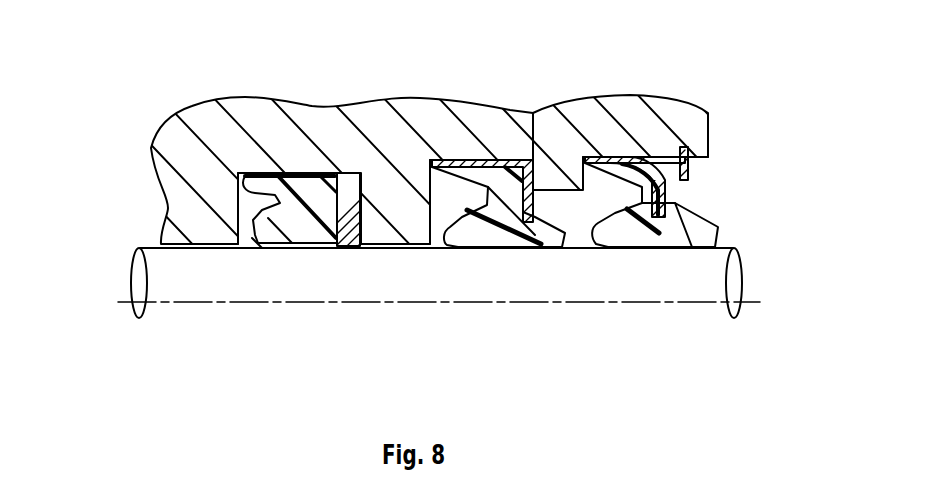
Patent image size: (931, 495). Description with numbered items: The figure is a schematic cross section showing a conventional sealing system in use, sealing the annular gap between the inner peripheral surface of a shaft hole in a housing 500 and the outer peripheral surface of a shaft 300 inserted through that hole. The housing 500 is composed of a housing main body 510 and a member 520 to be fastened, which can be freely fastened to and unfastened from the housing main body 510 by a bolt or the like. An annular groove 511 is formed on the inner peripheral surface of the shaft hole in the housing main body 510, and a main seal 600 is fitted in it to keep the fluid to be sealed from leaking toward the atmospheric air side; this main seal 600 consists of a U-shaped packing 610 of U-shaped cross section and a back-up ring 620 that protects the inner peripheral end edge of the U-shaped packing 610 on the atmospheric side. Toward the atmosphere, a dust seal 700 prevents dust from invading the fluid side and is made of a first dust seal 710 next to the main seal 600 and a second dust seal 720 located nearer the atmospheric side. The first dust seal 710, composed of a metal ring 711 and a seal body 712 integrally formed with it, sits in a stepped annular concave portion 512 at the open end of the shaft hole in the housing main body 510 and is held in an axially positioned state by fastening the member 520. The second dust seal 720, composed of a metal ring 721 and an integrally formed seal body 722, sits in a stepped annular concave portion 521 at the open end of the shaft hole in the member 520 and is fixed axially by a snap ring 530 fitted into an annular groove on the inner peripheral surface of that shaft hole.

The shaft 300 is at (143, 255).
The housing 500 is at (441, 128).
The housing main body 510 is at (441, 132).
The annular groove 511 is at (240, 200).
The annular concave portion 512 is at (413, 187).
The member to be fastened 520 is at (441, 128).
The annular concave portion 521 is at (593, 157).
The snap ring 530 is at (688, 170).
The main seal 600 is at (555, 260).
The U-shaped packing 610 is at (263, 240).
The back-up ring 620 is at (357, 242).
The dust seal 700 is at (610, 206).
The first dust seal 710 is at (610, 204).
The metal ring 711 is at (487, 158).
The seal body 712 is at (460, 237).
The second dust seal 720 is at (610, 206).
The metal ring 721 is at (645, 152).
The seal body 722 is at (630, 243).